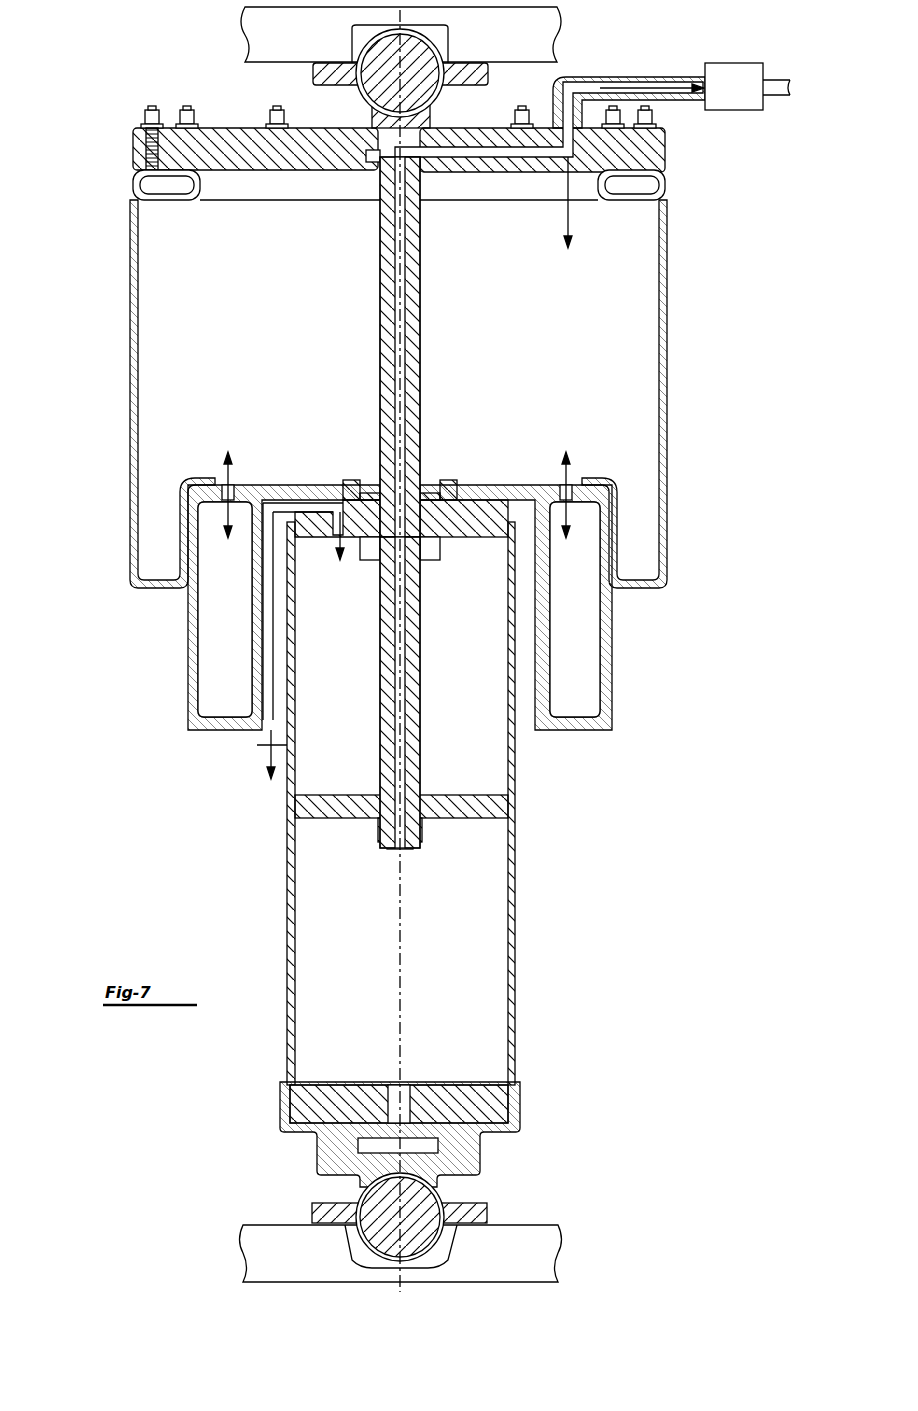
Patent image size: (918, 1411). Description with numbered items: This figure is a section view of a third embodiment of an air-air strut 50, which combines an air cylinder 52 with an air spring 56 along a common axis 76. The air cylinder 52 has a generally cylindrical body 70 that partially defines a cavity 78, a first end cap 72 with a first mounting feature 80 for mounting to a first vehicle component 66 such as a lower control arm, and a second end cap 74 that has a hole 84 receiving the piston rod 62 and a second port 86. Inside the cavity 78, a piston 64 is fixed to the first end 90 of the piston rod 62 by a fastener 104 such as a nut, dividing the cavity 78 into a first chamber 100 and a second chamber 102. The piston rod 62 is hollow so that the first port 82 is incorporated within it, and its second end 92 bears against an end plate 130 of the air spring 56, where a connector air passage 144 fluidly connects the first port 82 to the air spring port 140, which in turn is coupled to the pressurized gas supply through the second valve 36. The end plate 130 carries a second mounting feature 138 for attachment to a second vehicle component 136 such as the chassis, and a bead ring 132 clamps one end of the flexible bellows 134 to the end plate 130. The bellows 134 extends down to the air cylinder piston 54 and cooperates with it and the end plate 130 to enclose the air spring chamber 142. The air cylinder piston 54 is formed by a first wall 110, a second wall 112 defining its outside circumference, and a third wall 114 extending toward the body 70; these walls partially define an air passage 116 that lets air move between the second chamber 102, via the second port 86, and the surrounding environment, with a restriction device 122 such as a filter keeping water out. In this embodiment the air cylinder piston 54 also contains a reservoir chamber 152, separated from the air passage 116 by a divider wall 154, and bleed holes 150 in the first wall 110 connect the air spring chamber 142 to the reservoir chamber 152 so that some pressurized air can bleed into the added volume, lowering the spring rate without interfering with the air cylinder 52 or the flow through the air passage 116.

The air-air strut 50 is at (117, 66).
The second vehicle component 136 is at (292, 46).
The second mounting feature 138 is at (312, 72).
The end plate 130 is at (330, 126).
The air spring port 140 is at (558, 84).
The connector air passage 144 is at (510, 158).
The second valve 36 is at (746, 97).
The second end 92 is at (376, 162).
The air spring 56 is at (116, 232).
The bead ring 132 is at (664, 180).
The flexible bellows 134 is at (667, 330).
The air spring chamber 142 is at (316, 366).
The second wall 112 is at (612, 645).
The first wall 110 is at (552, 485).
The hole 84 is at (432, 514).
The second end cap 74 is at (470, 540).
The reservoir chamber 152 is at (236, 668).
The bleed holes 150 is at (220, 480).
The air passage 116 is at (282, 655).
The second port 86 is at (325, 527).
The air cylinder piston 54 is at (176, 620).
The divider wall 154 is at (250, 683).
The restriction device 122 is at (256, 738).
The third wall 114 is at (565, 731).
The body 70 is at (290, 940).
The air cylinder 52 is at (522, 912).
The second chamber 102 is at (356, 724).
The first chamber 100 is at (356, 1001).
The cavity 78 is at (500, 1056).
The piston 64 is at (460, 819).
The fastener 104 is at (378, 830).
The first end 90 is at (395, 851).
The first end cap 72 is at (478, 1152).
The first vehicle component 66 is at (308, 1264).
The first mounting feature 80 is at (487, 1213).
The first port 82 is at (421, 372).
The piston rod 62 is at (421, 670).
The axis 76 is at (415, 949).